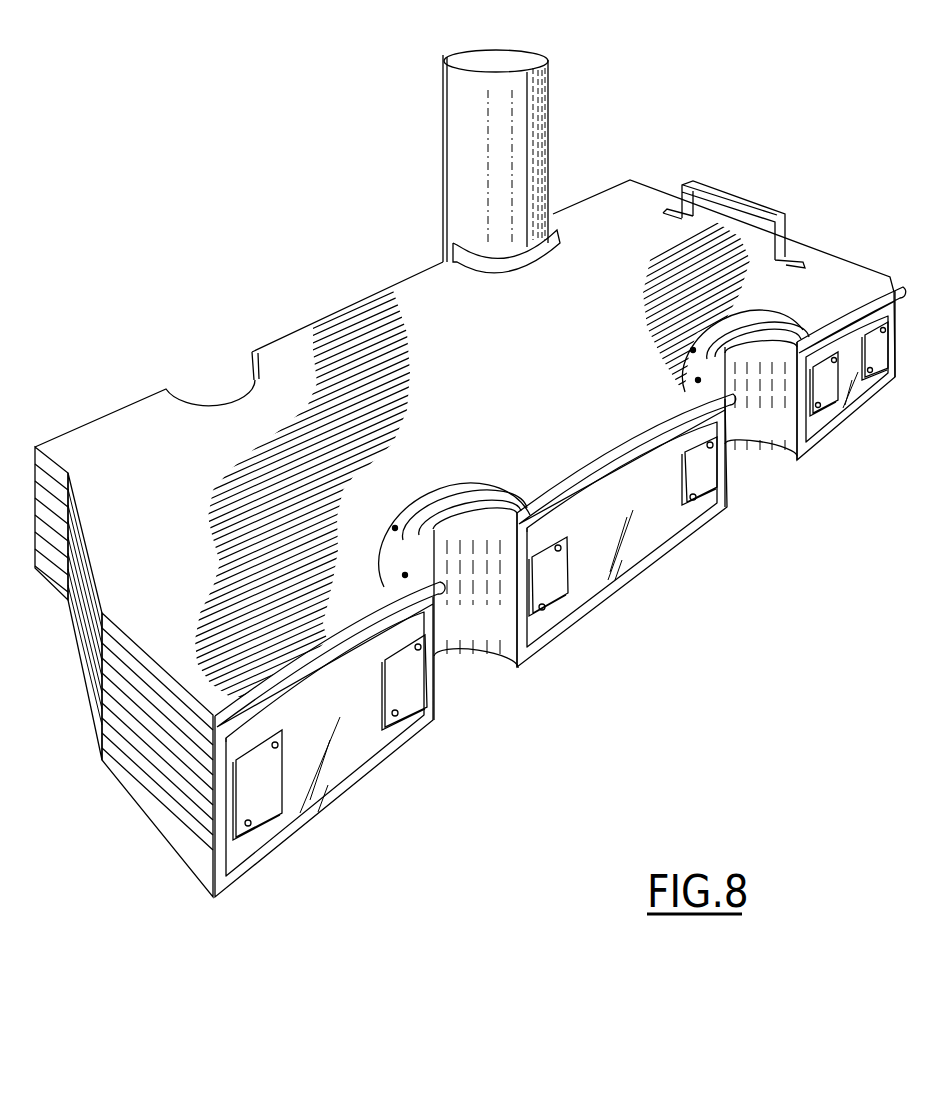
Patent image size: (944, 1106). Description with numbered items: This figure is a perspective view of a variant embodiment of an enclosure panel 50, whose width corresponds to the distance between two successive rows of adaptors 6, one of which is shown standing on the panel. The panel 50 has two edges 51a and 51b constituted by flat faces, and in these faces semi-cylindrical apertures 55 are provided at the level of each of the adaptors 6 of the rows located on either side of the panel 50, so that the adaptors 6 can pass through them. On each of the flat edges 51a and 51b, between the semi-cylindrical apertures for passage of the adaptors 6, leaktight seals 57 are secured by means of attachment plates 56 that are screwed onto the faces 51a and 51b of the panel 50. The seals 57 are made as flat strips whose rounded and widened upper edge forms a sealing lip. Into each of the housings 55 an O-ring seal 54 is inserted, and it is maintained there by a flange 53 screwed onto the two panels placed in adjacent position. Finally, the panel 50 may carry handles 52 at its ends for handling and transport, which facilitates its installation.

The adaptor 6 is at (527, 103).
The panel 50 is at (112, 480).
The edge 51a is at (302, 322).
The edge 51b is at (593, 475).
The handle 52 is at (733, 203).
The flange 53 is at (460, 477).
The O-ring seal 54 is at (482, 517).
The semi-cylindrical aperture 55 is at (612, 508).
The attachment plate 56 is at (410, 682).
The leaktight seal 57 is at (585, 583).